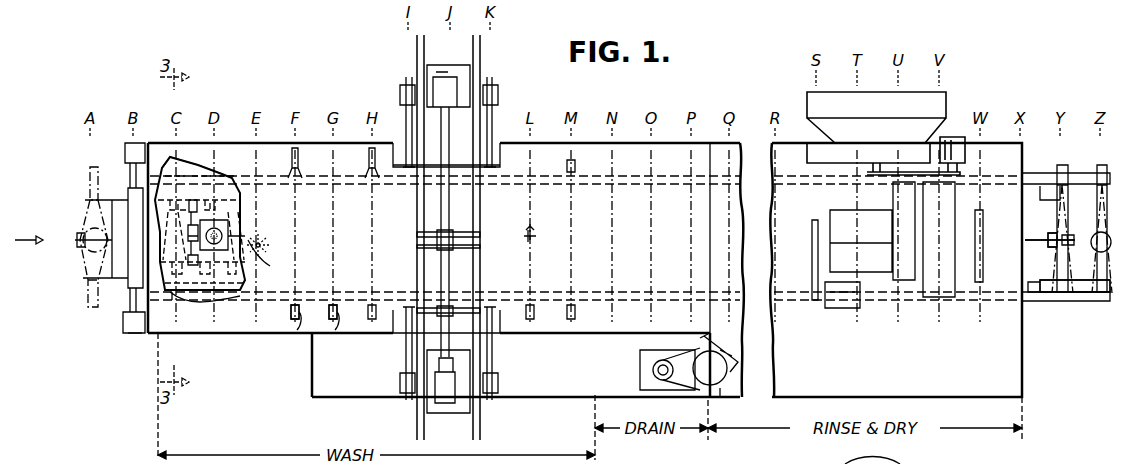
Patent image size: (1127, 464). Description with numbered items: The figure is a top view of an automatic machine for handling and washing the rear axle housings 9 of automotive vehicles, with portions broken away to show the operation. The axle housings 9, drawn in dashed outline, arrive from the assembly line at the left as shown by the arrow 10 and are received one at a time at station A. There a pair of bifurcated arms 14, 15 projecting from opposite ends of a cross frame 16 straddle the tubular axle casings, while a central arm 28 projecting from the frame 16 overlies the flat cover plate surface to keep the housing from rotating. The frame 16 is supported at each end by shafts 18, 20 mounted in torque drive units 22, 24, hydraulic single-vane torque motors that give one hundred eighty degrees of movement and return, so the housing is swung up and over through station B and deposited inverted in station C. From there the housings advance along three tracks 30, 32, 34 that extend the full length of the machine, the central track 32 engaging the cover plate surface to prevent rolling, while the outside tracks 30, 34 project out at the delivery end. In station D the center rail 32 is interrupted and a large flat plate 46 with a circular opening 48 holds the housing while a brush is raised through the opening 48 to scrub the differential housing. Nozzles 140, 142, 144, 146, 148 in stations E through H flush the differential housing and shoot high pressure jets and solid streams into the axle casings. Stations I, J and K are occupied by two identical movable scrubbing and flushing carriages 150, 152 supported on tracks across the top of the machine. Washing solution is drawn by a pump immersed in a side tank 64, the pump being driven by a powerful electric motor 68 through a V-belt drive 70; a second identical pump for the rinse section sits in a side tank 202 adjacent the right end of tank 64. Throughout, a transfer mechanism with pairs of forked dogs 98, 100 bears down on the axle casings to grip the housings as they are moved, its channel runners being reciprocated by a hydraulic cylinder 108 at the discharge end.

The arrow 10 is at (16, 240).
The rear axle housing 9 is at (86, 262).
The bifurcated arm 14 is at (85, 278).
The bifurcated arm 15 is at (86, 200).
The cross frame 16 is at (132, 265).
The shaft 18 is at (130, 300).
The shaft 20 is at (129, 172).
The torque drive unit 22 is at (134, 334).
The torque drive unit 24 is at (128, 144).
The central arm 28 is at (78, 240).
The track 30 is at (223, 175).
The central track 32 is at (256, 242).
The track 34 is at (226, 300).
The flat plate 46 is at (204, 230).
The circular opening 48 is at (216, 250).
The side tank 64 is at (543, 396).
The electric motor 68 is at (742, 370).
The V-belt drive 70 is at (676, 352).
The forked dog 98 is at (192, 166).
The forked dog 100 is at (1052, 294).
The hydraulic cylinder 108 is at (1042, 247).
The nozzle 140 is at (283, 253).
The nozzle 142 is at (298, 160).
The nozzle 144 is at (298, 330).
The nozzle 146 is at (338, 324).
The nozzle 148 is at (368, 152).
The scrubbing and flushing carriage 150 is at (368, 78).
The scrubbing and flushing carriage 152 is at (390, 404).
The side tank 202 is at (722, 391).